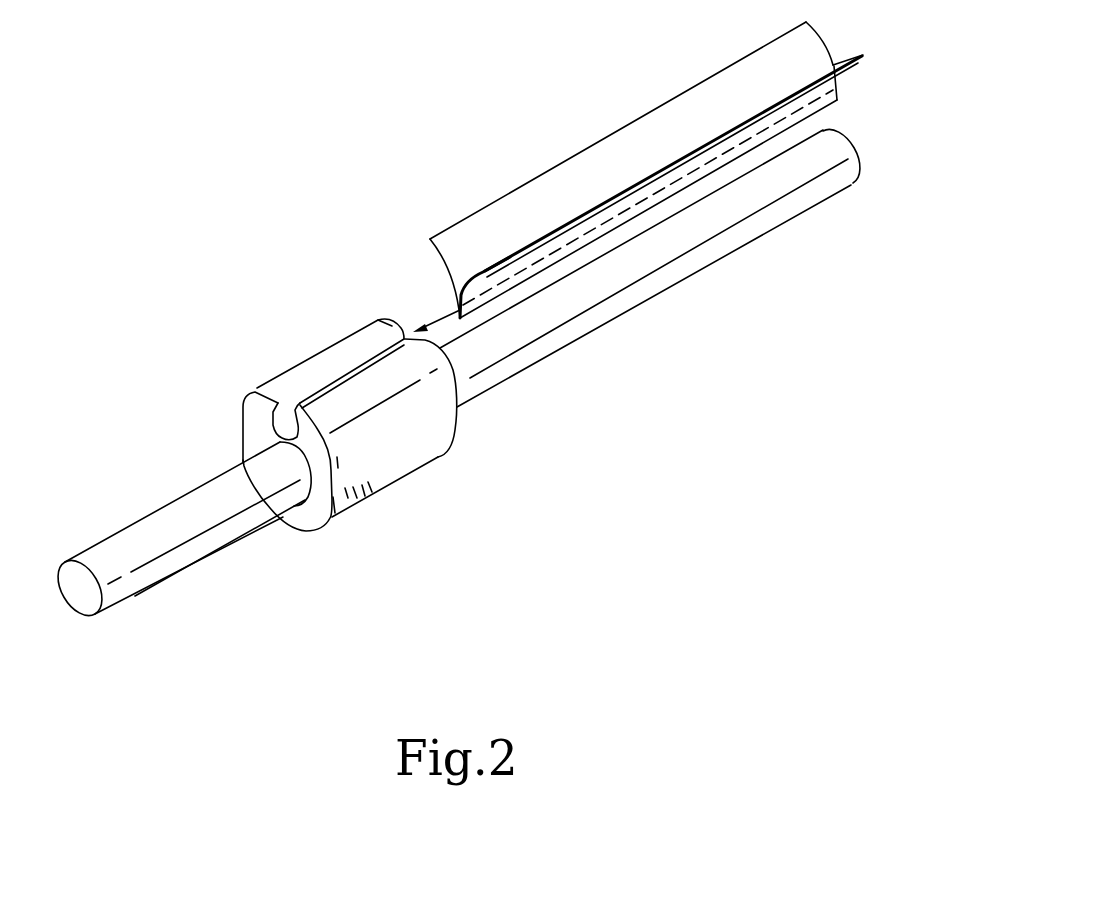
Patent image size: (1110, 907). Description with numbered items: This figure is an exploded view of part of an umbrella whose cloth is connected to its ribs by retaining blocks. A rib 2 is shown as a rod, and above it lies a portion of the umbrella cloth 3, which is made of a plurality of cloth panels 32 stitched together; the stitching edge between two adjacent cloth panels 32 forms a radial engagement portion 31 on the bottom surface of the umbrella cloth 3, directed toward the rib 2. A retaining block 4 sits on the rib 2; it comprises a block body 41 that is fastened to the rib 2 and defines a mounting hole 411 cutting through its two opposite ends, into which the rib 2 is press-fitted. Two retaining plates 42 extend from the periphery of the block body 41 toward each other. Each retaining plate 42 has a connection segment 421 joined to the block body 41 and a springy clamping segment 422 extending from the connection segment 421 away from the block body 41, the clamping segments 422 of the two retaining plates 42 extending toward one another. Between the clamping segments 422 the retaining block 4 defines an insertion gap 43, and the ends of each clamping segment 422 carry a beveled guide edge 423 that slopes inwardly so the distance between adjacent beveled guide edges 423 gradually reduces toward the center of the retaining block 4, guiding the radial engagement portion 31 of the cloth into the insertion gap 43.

The rib 2 is at (138, 521).
The umbrella cloth 3 is at (638, 213).
The radial engagement portion 31 is at (697, 180).
The cloth panel 32 is at (758, 127).
The retaining block 4 is at (352, 413).
The block body 41 is at (435, 435).
The mounting hole 411 is at (332, 517).
The retaining plate 42 is at (352, 362).
The connection segment 421 is at (255, 418).
The clamping segment 422 is at (388, 330).
The beveled guide edge 423 is at (280, 401).
The insertion gap 43 is at (360, 364).